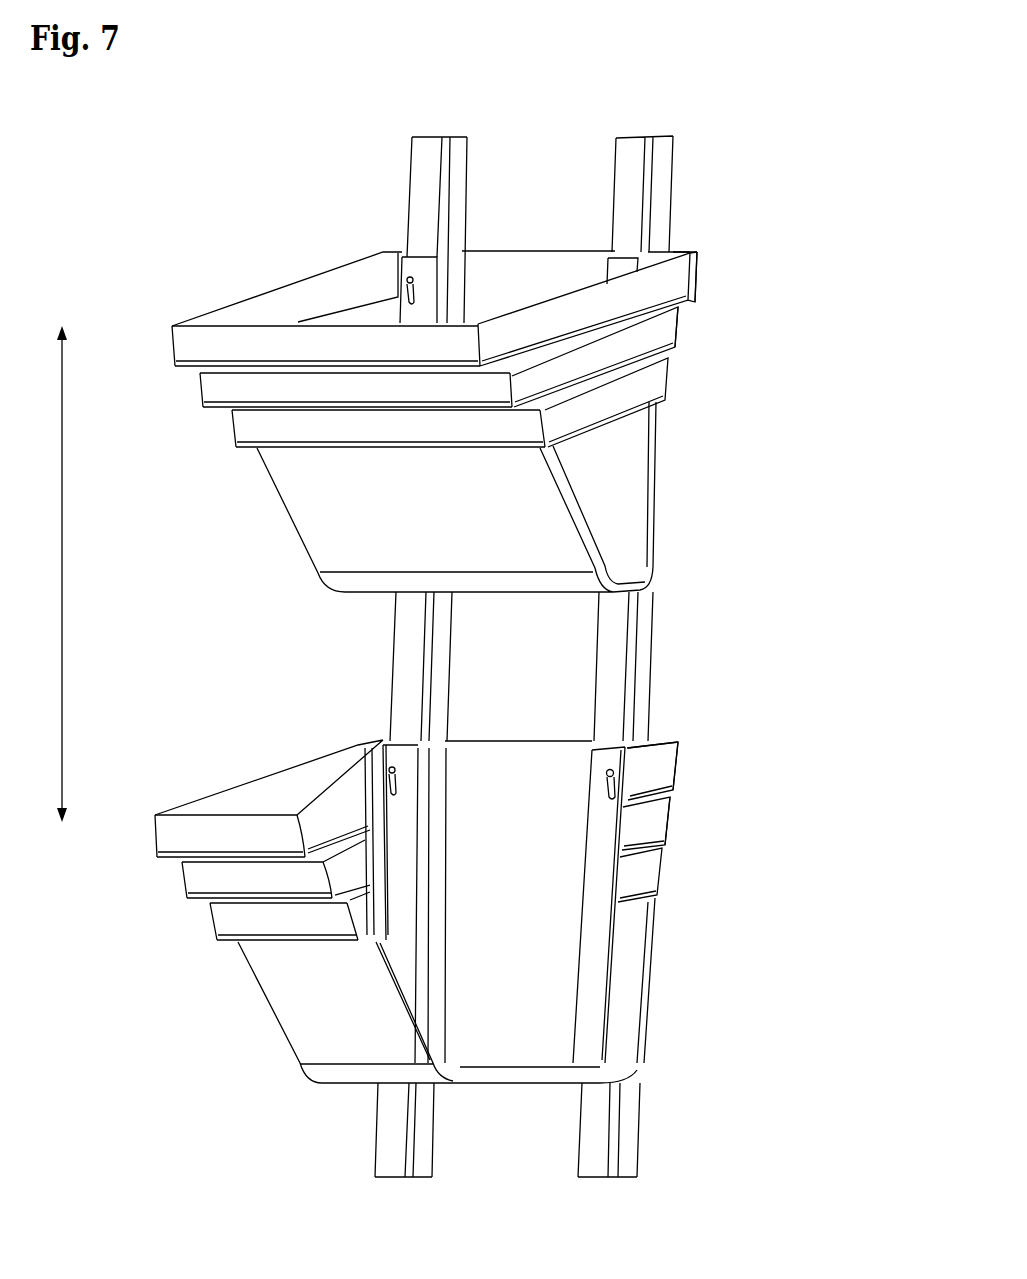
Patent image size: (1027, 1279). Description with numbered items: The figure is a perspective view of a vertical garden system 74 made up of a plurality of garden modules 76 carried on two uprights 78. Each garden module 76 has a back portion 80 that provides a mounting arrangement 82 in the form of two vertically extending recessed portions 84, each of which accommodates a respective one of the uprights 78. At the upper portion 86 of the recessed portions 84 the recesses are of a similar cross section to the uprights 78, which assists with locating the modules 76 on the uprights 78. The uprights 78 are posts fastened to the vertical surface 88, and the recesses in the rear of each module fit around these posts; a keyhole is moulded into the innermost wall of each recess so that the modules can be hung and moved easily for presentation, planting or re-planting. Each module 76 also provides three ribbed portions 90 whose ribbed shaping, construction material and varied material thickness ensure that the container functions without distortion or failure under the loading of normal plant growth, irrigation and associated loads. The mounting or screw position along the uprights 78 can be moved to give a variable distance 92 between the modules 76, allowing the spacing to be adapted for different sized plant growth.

The vertical garden system 74 is at (266, 104).
The garden module 76 is at (250, 258).
The upright 78 is at (468, 191).
The back portion 80 is at (725, 229).
The mounting arrangement 82 is at (697, 205).
The recessed portion 84 is at (405, 257).
The upper portion 86 is at (721, 273).
The vertical surface 88 is at (638, 1123).
The ribbed portion 90 is at (172, 346).
The variable distance 92 is at (62, 628).